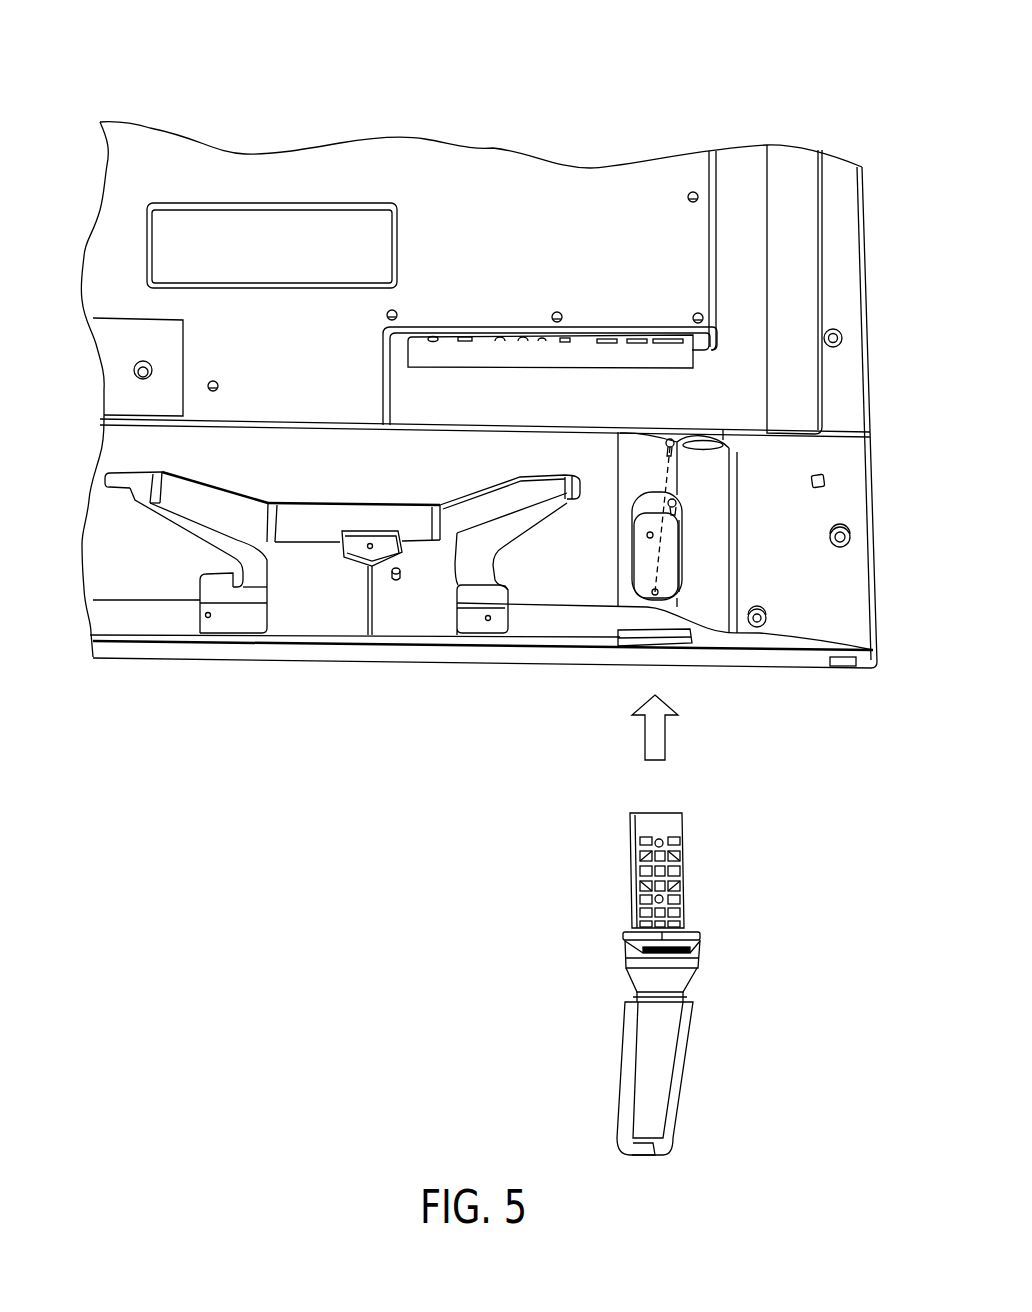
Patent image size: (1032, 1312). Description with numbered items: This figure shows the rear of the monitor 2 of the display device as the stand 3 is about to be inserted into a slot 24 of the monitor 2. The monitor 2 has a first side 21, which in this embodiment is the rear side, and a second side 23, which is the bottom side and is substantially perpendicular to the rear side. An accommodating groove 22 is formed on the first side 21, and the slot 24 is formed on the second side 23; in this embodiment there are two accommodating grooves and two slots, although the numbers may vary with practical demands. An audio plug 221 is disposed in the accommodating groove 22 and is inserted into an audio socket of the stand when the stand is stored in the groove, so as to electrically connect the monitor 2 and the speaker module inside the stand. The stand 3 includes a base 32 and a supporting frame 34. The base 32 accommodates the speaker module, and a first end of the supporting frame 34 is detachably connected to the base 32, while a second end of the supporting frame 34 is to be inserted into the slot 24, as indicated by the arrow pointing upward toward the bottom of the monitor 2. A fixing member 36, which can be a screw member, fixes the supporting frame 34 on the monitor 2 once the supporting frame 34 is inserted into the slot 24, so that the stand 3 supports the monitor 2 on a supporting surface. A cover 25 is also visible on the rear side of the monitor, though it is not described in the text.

The monitor 2 is at (733, 72).
The first side 21 is at (553, 180).
The accommodating groove 22 is at (307, 520).
The audio plug 221 is at (397, 582).
The second side 23 is at (282, 662).
The slot 24 is at (678, 639).
The cover plate 25 is at (370, 203).
The fixing member 36 is at (675, 446).
The stand 3 is at (709, 977).
The base 32 is at (692, 1043).
The supporting frame 34 is at (684, 818).